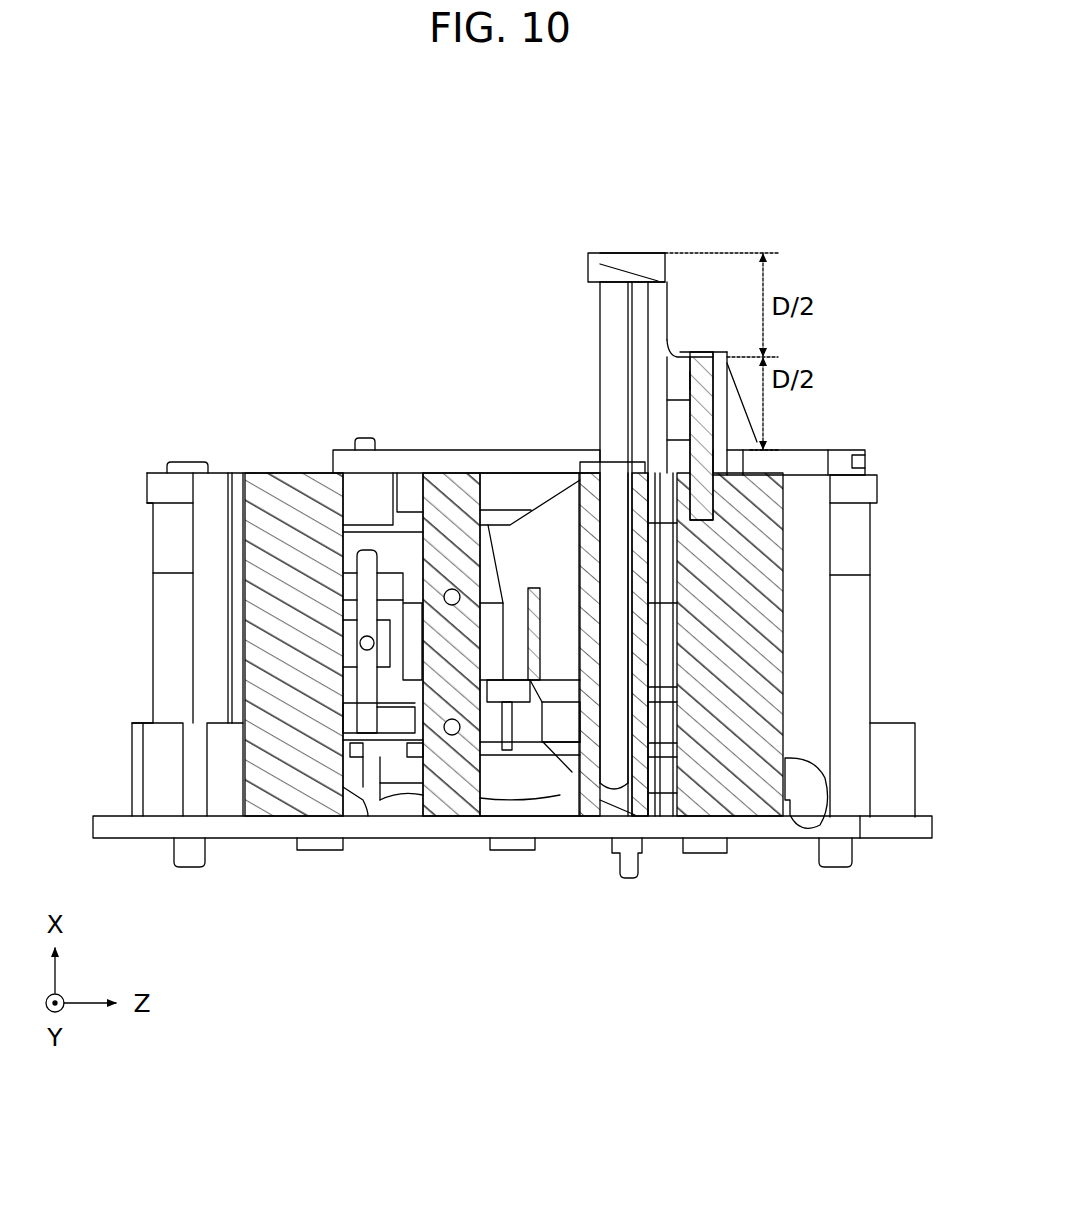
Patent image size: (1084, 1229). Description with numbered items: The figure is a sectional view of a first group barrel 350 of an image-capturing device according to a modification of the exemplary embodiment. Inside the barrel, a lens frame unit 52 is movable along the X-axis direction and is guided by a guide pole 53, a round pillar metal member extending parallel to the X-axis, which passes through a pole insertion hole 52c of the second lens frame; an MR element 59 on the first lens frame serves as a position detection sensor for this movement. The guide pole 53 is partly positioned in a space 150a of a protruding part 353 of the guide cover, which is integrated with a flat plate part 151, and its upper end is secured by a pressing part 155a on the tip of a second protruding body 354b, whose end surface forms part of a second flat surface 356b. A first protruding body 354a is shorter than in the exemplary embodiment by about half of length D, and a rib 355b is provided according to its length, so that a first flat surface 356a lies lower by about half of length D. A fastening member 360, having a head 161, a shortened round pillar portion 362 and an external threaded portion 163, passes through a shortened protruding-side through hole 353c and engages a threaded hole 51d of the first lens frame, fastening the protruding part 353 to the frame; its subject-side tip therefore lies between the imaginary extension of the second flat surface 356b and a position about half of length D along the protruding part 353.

The MR element 59 is at (438, 822).
The lens frame unit 52 is at (590, 783).
The pole insertion hole 52c is at (630, 757).
The guide pole 53 is at (610, 322).
The pressing part 155a is at (600, 265).
The space 150a is at (645, 283).
The second flat surface 356b is at (608, 253).
The second protruding body 354b is at (653, 290).
The protruding part 353 is at (647, 248).
The first flat surface 356a is at (665, 345).
The first group barrel 350 is at (856, 293).
The first protruding body 354a is at (707, 352).
The rib 355b is at (735, 433).
The head 161 is at (713, 357).
The round pillar portion 362 is at (697, 378).
The fastening member 360 is at (680, 408).
The protruding-side through hole 353c is at (688, 431).
The flat plate part 151 is at (382, 457).
The external threaded portion 163 is at (703, 484).
The threaded hole 51d is at (705, 499).